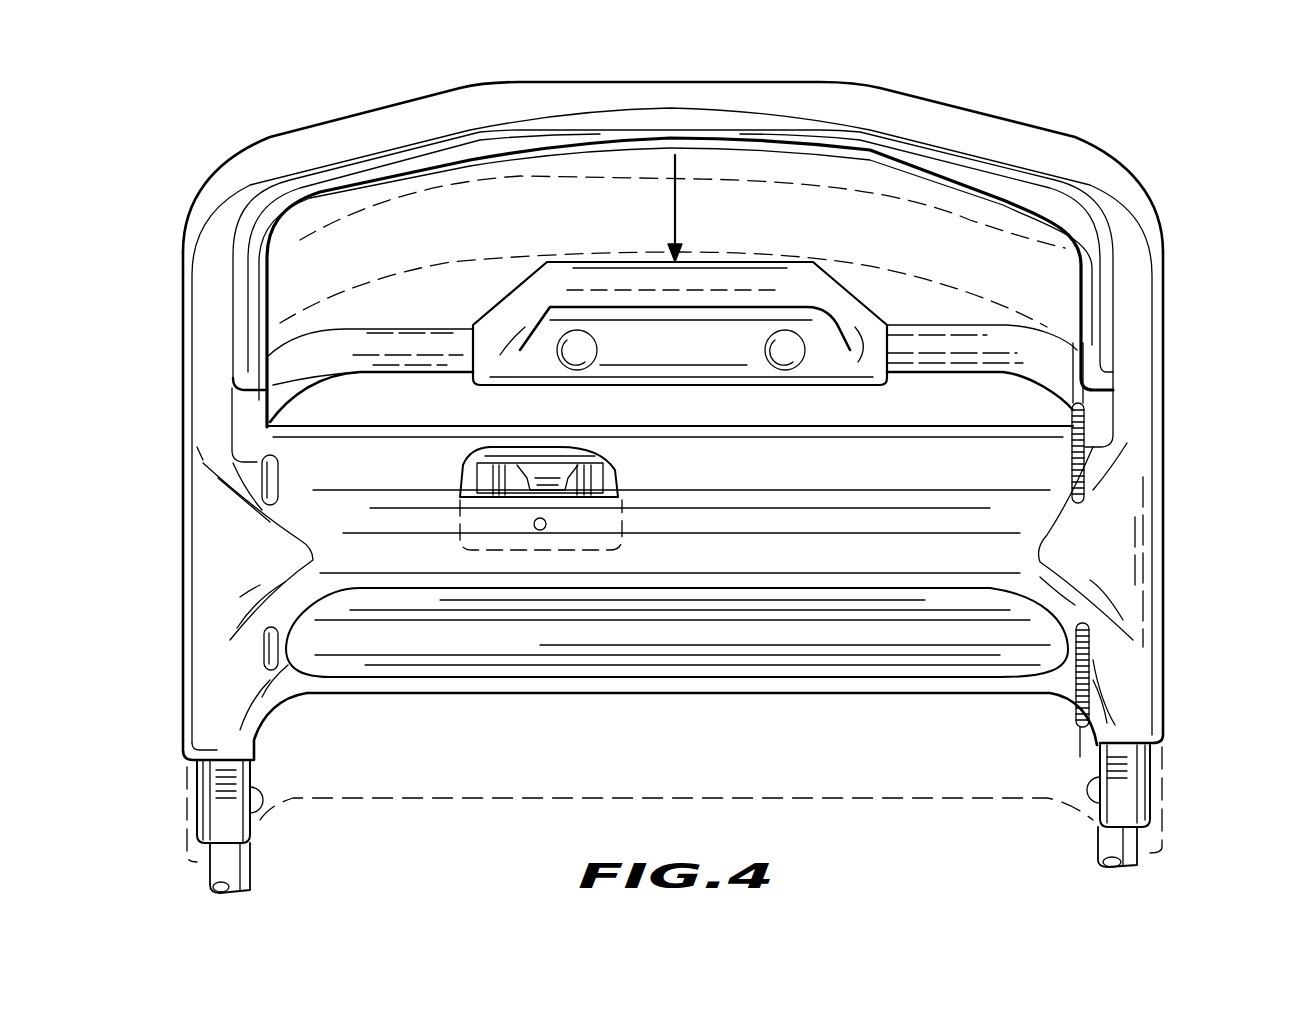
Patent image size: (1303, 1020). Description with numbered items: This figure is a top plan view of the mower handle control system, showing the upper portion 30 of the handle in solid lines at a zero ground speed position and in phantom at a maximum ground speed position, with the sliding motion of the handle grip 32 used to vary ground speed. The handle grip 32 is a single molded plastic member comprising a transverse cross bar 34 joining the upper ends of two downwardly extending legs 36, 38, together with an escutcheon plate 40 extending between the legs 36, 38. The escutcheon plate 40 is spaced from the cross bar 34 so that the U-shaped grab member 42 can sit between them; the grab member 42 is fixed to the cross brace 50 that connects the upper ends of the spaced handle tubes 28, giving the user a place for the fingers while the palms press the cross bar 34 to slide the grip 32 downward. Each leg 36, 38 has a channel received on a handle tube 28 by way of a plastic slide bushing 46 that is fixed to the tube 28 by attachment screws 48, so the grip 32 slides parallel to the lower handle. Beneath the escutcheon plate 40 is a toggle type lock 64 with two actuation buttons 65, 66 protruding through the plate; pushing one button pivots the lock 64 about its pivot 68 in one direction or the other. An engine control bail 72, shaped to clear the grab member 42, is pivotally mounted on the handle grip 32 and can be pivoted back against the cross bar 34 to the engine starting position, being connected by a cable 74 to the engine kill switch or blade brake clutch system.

The handle tube 28 is at (223, 870).
The upper portion of handle 30 is at (1170, 185).
The handle grip 32 is at (1097, 557).
The transverse cross bar 34 is at (350, 130).
The leg 36 is at (207, 420).
The leg 38 is at (1123, 512).
The escutcheon plate 40 is at (863, 470).
The grab member 42 is at (743, 272).
The slide bushing 46 is at (227, 790).
The attachment screw 48 is at (277, 782).
The cross brace 50 is at (1013, 325).
The lock 64 is at (515, 444).
The actuation button 65 is at (500, 467).
The actuation button 66 is at (590, 462).
The pivot 68 is at (553, 521).
The engine control bail 72 is at (973, 173).
The cable 74 is at (1087, 470).